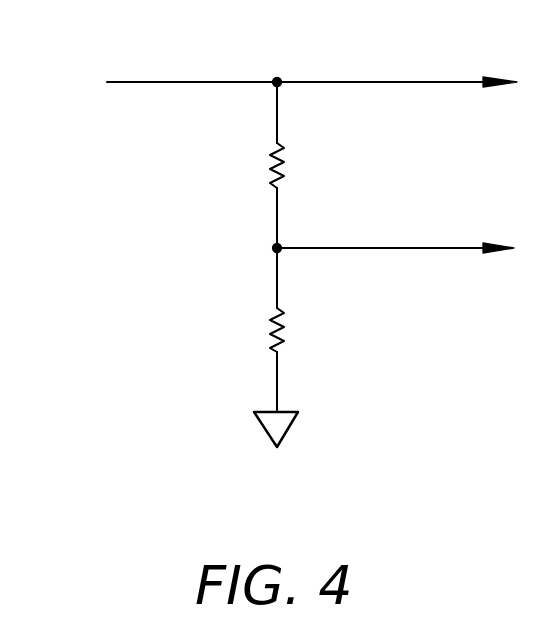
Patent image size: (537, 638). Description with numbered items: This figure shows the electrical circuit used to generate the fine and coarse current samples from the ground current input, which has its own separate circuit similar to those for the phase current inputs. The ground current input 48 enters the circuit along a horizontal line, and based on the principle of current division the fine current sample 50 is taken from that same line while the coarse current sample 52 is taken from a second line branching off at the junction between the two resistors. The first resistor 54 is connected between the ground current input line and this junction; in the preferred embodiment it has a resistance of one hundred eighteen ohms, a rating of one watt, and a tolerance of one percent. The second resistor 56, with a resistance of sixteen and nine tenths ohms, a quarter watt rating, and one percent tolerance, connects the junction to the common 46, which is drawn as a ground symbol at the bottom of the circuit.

The common 46 is at (290, 428).
The ground current input 48 is at (150, 82).
The fine current sample 50 is at (436, 82).
The coarse current sample 52 is at (431, 249).
The first resistor 54 is at (270, 166).
The second resistor 56 is at (270, 329).